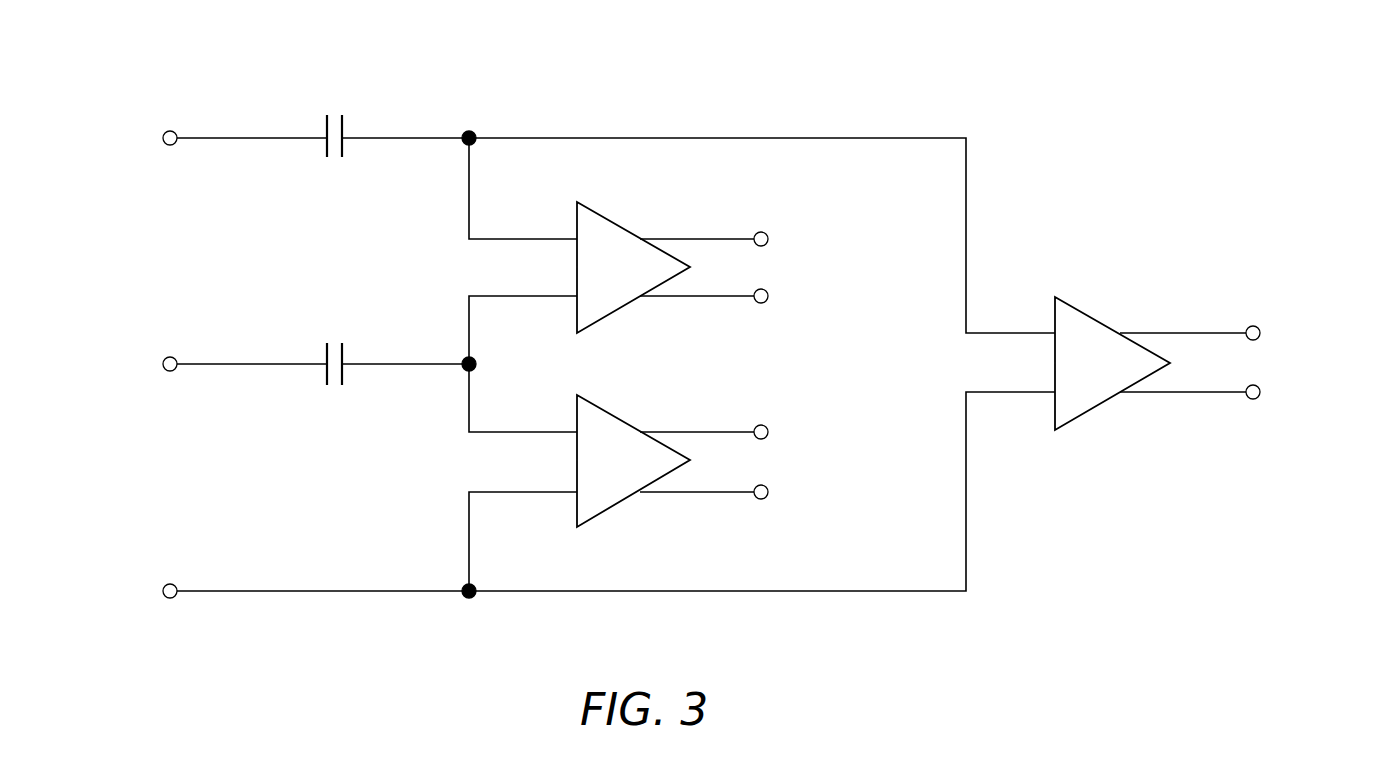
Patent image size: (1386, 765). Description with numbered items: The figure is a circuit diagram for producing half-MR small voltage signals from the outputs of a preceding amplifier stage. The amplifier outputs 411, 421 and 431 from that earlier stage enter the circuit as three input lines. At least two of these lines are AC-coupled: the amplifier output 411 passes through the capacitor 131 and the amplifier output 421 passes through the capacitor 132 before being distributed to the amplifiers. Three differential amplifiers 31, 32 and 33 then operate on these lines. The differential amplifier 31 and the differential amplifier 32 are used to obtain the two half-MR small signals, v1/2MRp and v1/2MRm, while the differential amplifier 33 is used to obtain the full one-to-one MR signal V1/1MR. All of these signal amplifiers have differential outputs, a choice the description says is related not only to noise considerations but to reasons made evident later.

The amplifier output 411 is at (170, 131).
The amplifier output 421 is at (170, 357).
The amplifier output 431 is at (170, 584).
The capacitor 131 is at (336, 110).
The capacitor 132 is at (336, 343).
The differential amplifier 31 is at (608, 220).
The differential amplifier 32 is at (601, 410).
The differential amplifier 33 is at (1075, 307).